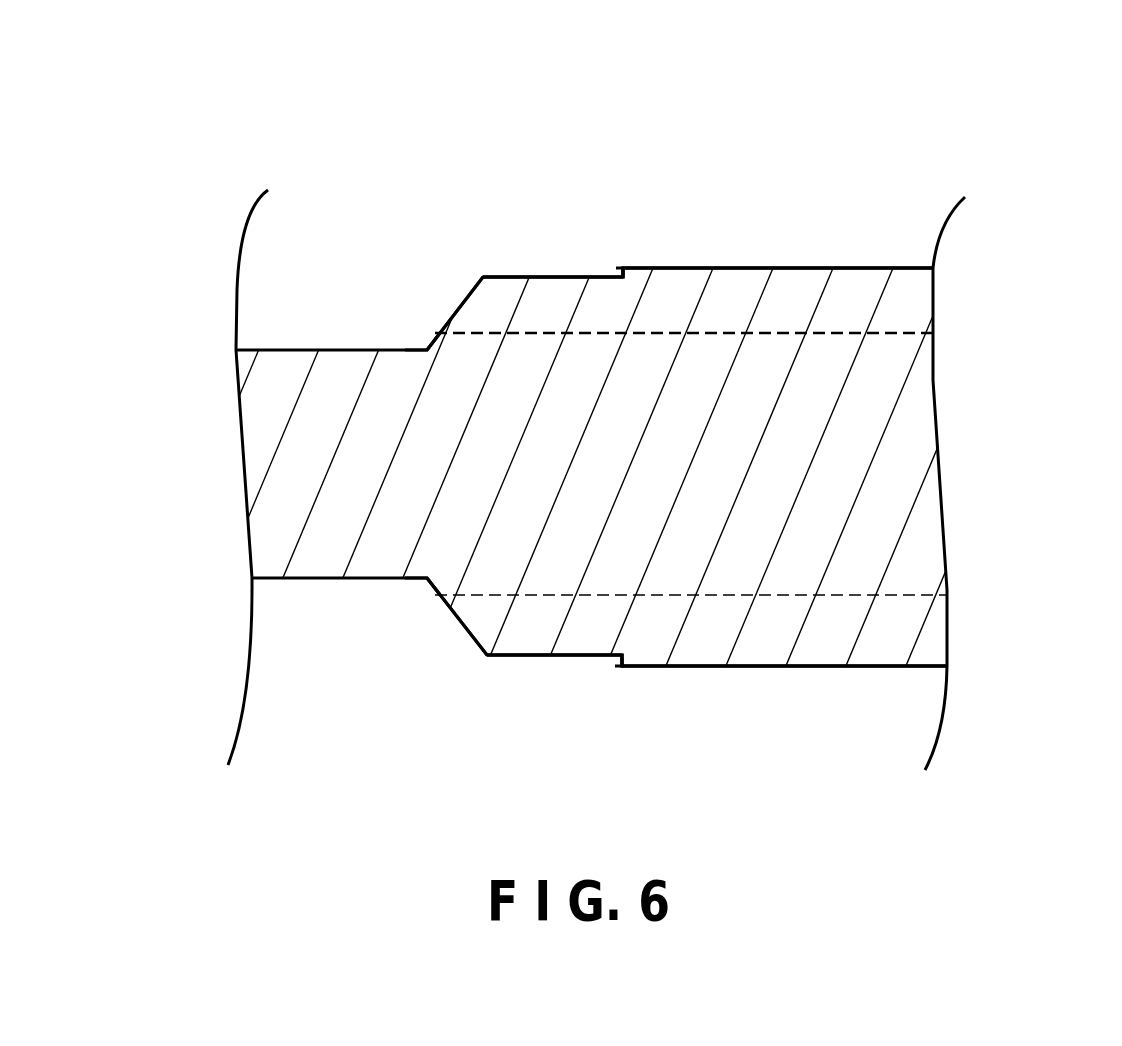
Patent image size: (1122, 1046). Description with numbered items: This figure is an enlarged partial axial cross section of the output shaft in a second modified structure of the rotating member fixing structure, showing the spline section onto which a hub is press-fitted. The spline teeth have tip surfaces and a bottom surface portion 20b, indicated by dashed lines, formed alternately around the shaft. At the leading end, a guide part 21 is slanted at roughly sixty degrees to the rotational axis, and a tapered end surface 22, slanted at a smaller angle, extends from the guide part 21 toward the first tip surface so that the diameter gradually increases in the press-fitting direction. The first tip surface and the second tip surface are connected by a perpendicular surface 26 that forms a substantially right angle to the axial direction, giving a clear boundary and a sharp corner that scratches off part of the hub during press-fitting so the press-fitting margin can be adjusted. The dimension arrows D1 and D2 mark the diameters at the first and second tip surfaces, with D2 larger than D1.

The perpendicular surface 26 is at (618, 270).
The tapered end surface 22 is at (440, 323).
The guide part 21 is at (430, 347).
The bottom surface portion 20b is at (877, 335).
The diameter D1 is at (581, 278).
The diameter D2 is at (738, 269).